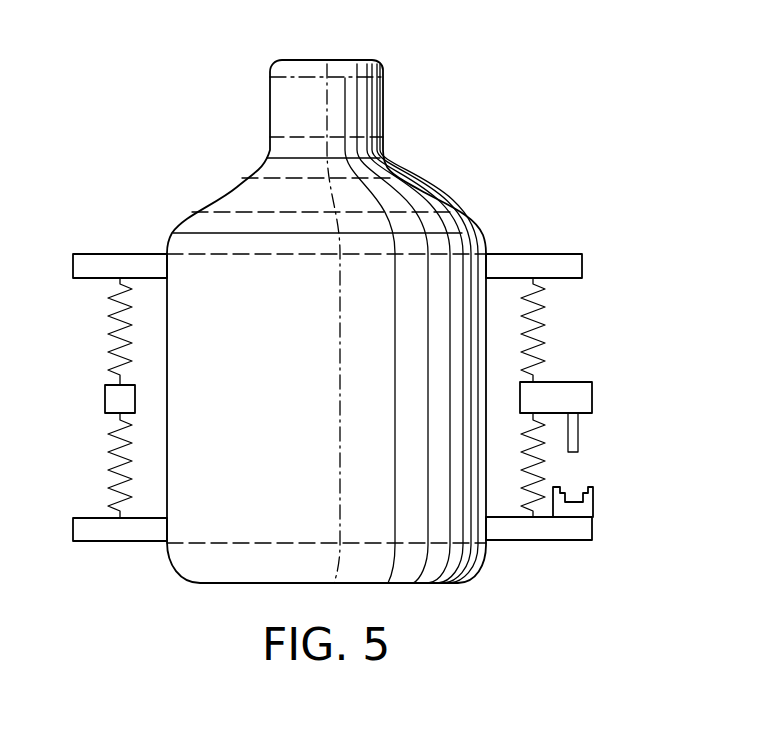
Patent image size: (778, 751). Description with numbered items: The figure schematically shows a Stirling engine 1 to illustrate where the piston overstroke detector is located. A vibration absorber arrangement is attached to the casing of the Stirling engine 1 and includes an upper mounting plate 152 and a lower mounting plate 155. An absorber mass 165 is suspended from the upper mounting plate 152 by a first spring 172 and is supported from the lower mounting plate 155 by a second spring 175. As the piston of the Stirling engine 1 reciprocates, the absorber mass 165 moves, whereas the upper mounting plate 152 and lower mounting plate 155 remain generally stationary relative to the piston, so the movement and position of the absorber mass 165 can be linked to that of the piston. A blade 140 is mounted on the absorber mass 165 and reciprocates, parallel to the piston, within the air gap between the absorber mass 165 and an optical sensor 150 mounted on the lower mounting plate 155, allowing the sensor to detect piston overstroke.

The Stirling engine 1 is at (279, 67).
The upper mounting plate 152 is at (583, 254).
The first spring 172 is at (546, 318).
The absorber mass 165 is at (592, 383).
The blade 140 is at (579, 448).
The second spring 175 is at (546, 480).
The optical sensor 150 is at (594, 494).
The lower mounting plate 155 is at (560, 541).